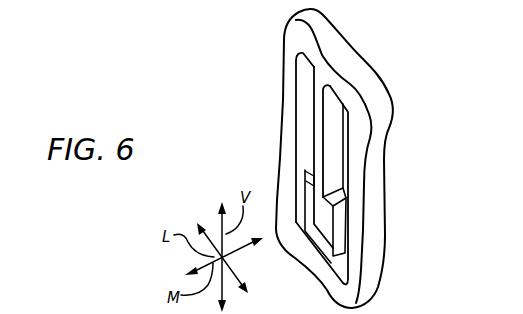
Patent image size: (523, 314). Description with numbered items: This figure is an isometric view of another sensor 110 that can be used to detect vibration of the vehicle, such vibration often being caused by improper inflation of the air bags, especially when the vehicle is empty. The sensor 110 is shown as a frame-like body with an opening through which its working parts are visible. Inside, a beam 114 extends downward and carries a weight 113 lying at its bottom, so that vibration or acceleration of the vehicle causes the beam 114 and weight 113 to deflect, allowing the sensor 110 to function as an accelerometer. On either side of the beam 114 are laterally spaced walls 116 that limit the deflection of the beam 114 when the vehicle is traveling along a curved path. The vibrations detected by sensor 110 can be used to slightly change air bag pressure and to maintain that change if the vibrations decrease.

The sensor 110 is at (204, 53).
The weight 113 is at (313, 196).
The beam 114 is at (316, 107).
The laterally spaced walls 116 is at (302, 70).